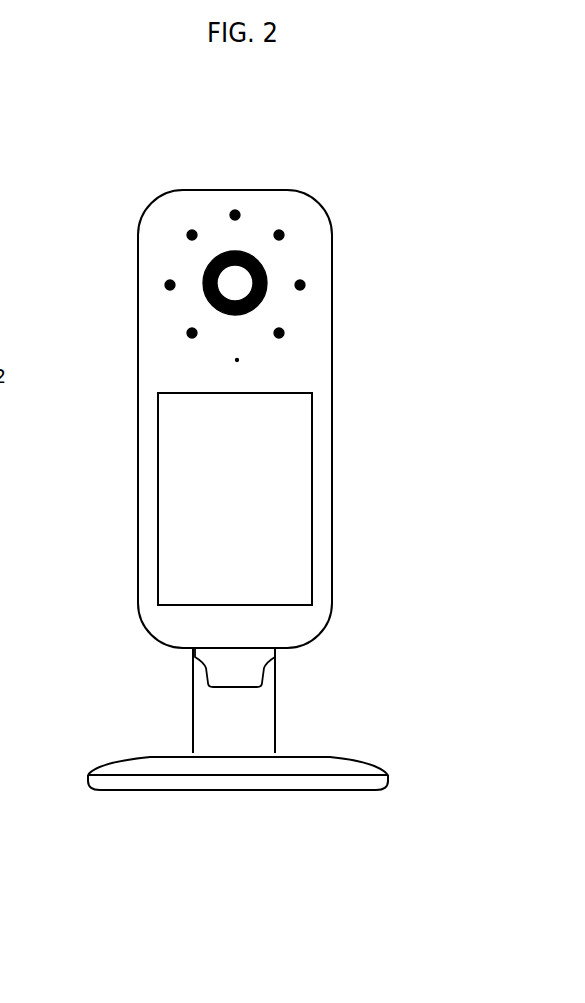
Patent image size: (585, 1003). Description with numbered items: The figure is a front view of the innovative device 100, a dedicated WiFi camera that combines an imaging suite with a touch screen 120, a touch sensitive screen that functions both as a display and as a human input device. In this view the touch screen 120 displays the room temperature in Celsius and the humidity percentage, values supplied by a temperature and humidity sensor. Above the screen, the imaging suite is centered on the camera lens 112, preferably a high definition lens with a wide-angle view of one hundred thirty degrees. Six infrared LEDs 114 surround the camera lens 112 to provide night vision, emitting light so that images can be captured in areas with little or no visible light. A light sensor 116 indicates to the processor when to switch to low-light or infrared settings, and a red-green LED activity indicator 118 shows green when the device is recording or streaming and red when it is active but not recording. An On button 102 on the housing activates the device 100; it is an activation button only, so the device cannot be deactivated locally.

The innovative device 100 is at (103, 183).
The On button 102 is at (332, 423).
The camera lens 112 is at (265, 280).
The infrared LEDs 114 is at (186, 333).
The light sensor 116 is at (237, 210).
The red-green LED activity indicator 118 is at (240, 360).
The touch screen 120 is at (300, 518).